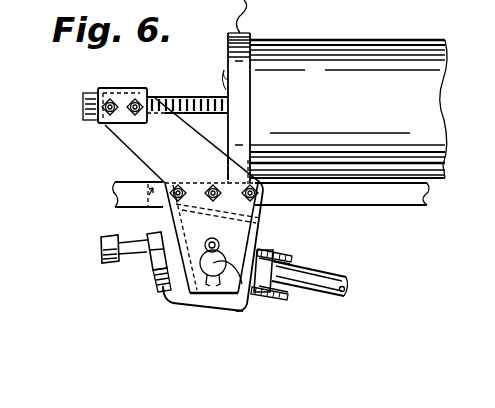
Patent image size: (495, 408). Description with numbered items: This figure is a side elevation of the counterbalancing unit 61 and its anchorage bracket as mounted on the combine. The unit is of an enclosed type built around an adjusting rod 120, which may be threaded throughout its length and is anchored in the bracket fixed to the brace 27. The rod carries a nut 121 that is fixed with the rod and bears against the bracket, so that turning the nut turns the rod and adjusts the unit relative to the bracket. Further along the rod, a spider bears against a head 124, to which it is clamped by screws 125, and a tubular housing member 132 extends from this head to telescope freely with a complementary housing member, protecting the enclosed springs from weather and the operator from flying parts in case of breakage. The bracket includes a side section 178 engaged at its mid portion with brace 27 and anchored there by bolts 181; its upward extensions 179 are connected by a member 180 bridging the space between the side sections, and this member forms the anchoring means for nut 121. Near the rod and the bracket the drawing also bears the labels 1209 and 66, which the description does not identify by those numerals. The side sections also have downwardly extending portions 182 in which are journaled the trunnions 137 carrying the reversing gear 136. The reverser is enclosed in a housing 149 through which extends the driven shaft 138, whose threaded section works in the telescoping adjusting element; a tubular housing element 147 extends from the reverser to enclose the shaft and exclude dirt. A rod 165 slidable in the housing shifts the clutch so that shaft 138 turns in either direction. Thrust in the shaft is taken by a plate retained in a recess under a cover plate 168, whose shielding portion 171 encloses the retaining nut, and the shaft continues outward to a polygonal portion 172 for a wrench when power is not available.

The counterbalancing unit 61 is at (348, 109).
The tubular housing member 132 is at (412, 40).
The brace 27 is at (365, 198).
The head 124 is at (245, 115).
The screws 125 is at (252, 80).
The adjusting rod 120 is at (204, 96).
The slide block 1209 is at (131, 84).
The member 180 is at (104, 82).
The nut 121 is at (83, 108).
The upward extensions 179 is at (120, 141).
The side section 178 is at (210, 217).
The bolts 181 is at (196, 168).
The guide plate 66 is at (144, 208).
The nut or polygonal portion 172 is at (114, 262).
The shielding portion 171 is at (149, 261).
The cover plate 168 is at (150, 272).
The downwardly extending portions 182 is at (197, 296).
The housing 149 is at (174, 309).
The reversing gear 136 is at (202, 316).
The trunnions 137 is at (235, 310).
The tubular housing element 147 is at (286, 256).
The rod 165 is at (262, 249).
The driven shaft 138 is at (346, 288).